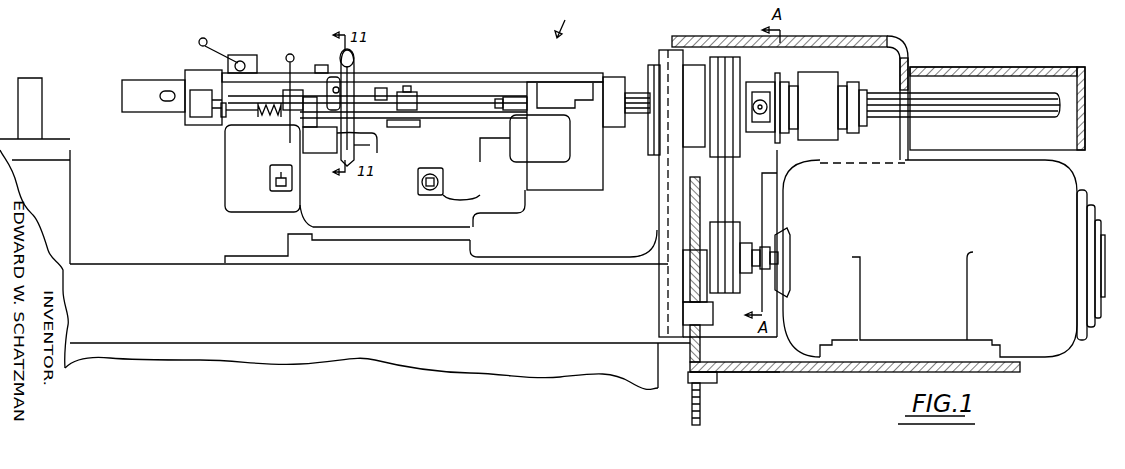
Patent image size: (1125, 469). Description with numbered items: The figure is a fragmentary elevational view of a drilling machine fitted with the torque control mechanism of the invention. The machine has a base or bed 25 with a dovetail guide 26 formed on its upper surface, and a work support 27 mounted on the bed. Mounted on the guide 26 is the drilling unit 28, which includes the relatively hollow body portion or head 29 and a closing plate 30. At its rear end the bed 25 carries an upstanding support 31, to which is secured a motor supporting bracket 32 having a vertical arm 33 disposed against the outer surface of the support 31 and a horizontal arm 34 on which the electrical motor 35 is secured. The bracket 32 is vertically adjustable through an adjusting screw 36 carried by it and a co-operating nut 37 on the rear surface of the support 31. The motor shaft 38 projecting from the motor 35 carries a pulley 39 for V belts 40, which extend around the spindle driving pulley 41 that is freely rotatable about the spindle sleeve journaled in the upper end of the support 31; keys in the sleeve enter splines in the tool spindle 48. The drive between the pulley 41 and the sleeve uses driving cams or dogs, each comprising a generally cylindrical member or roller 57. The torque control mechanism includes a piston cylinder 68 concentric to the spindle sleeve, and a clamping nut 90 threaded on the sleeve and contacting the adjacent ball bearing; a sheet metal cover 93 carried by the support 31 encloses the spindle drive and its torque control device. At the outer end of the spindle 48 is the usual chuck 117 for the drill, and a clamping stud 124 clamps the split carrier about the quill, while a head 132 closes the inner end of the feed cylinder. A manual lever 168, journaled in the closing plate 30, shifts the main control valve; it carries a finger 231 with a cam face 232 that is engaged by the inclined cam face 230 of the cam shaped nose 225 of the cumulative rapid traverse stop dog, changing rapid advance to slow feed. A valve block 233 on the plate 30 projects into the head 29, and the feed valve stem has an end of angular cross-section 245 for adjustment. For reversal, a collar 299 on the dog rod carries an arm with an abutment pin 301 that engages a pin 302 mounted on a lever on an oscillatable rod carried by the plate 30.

The base or bed 25 is at (378, 335).
The dovetail guide 26 is at (490, 233).
The work support 27 is at (58, 208).
The drilling unit 28 is at (551, 22).
The body portion or head 29 is at (232, 192).
The closing plate 30 is at (292, 218).
The upstanding support 31 is at (677, 60).
The motor supporting bracket 32 is at (870, 372).
The vertical arm 33 is at (697, 240).
The horizontal arm 34 is at (768, 372).
The electrical motor 35 is at (1065, 188).
The adjusting screw 36 is at (705, 395).
The nut 37 is at (690, 318).
The motor shaft 38 is at (763, 258).
The pulley 39 is at (742, 232).
The V belts 40 is at (725, 196).
The spindle driving pulley 41 is at (740, 72).
The tool spindle 48 is at (633, 92).
The cylindrical member or roller 57 is at (762, 112).
The piston cylinder 68 is at (820, 80).
The clamping nut 90 is at (872, 120).
The sheet metal cover 93 is at (890, 42).
The chuck 117 is at (157, 60).
The clamping stud 124 is at (240, 60).
The head 132 is at (278, 36).
The lever 168 is at (352, 82).
The cam shaped nose 225 is at (378, 130).
The inclined cam face 230 is at (387, 133).
The finger 231 is at (370, 145).
The cam face 232 is at (352, 143).
The valve block 233 is at (463, 193).
The end of angular cross-section 245 is at (440, 178).
The collar 299 is at (224, 127).
The abutment pin 301 is at (228, 118).
The pin 302 is at (300, 160).